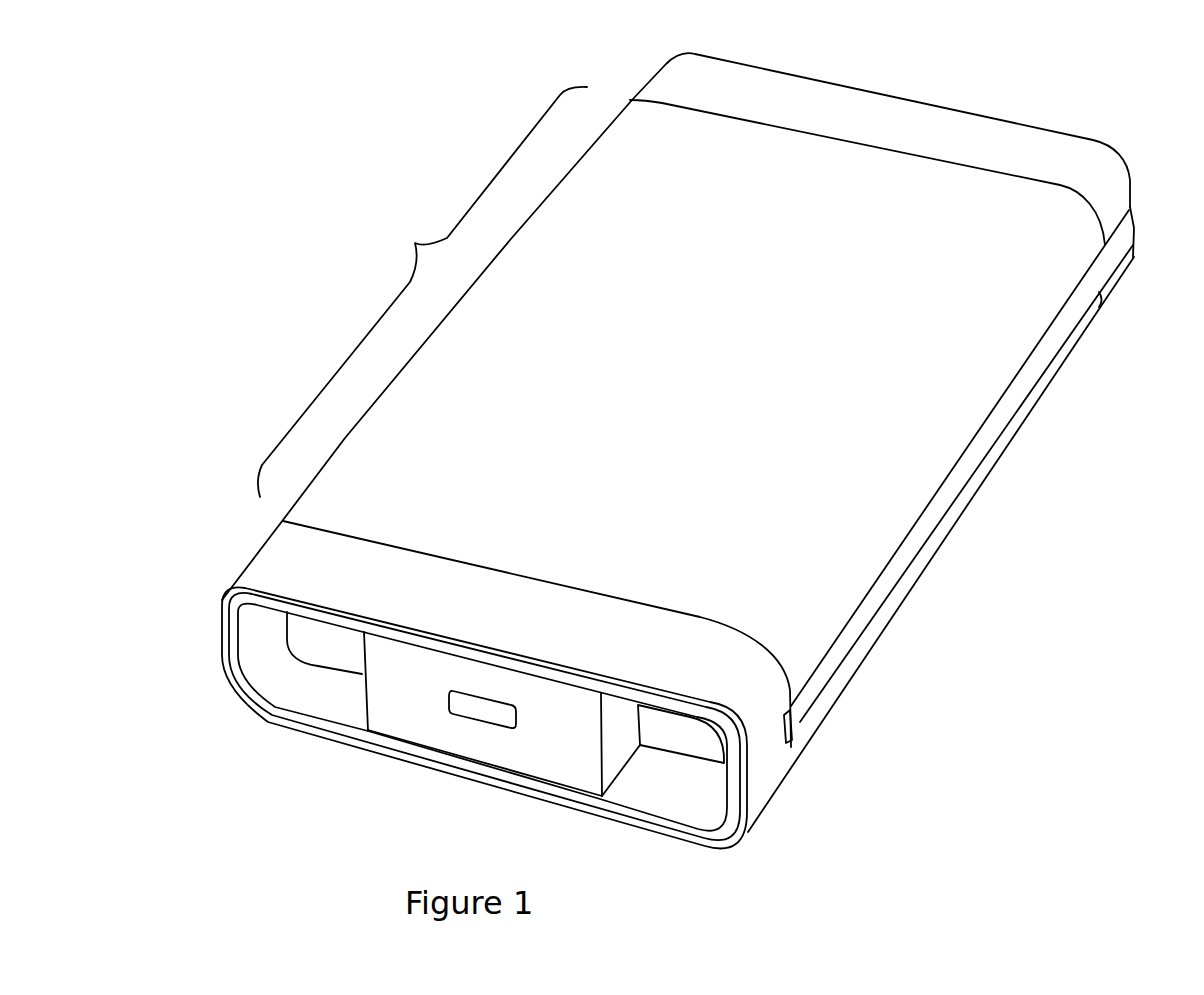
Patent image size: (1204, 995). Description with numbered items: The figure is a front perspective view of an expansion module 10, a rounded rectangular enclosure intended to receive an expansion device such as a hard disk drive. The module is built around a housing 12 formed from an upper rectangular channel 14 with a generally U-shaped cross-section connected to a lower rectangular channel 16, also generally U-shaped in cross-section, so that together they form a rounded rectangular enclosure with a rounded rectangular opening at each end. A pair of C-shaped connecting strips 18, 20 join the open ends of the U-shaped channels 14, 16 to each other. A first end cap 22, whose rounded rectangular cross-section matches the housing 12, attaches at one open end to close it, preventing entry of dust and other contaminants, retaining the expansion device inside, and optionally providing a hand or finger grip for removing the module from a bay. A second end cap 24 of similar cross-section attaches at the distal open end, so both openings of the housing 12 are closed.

The expansion module 10 is at (312, 200).
The housing 12 is at (676, 326).
The upper rectangular channel 14 is at (943, 428).
The lower rectangular channel 16 is at (954, 528).
The C-shaped connecting strip 18 is at (898, 574).
The C-shaped connecting strip 20 is at (217, 605).
The first end cap 22 is at (763, 798).
The second end cap 24 is at (1118, 267).